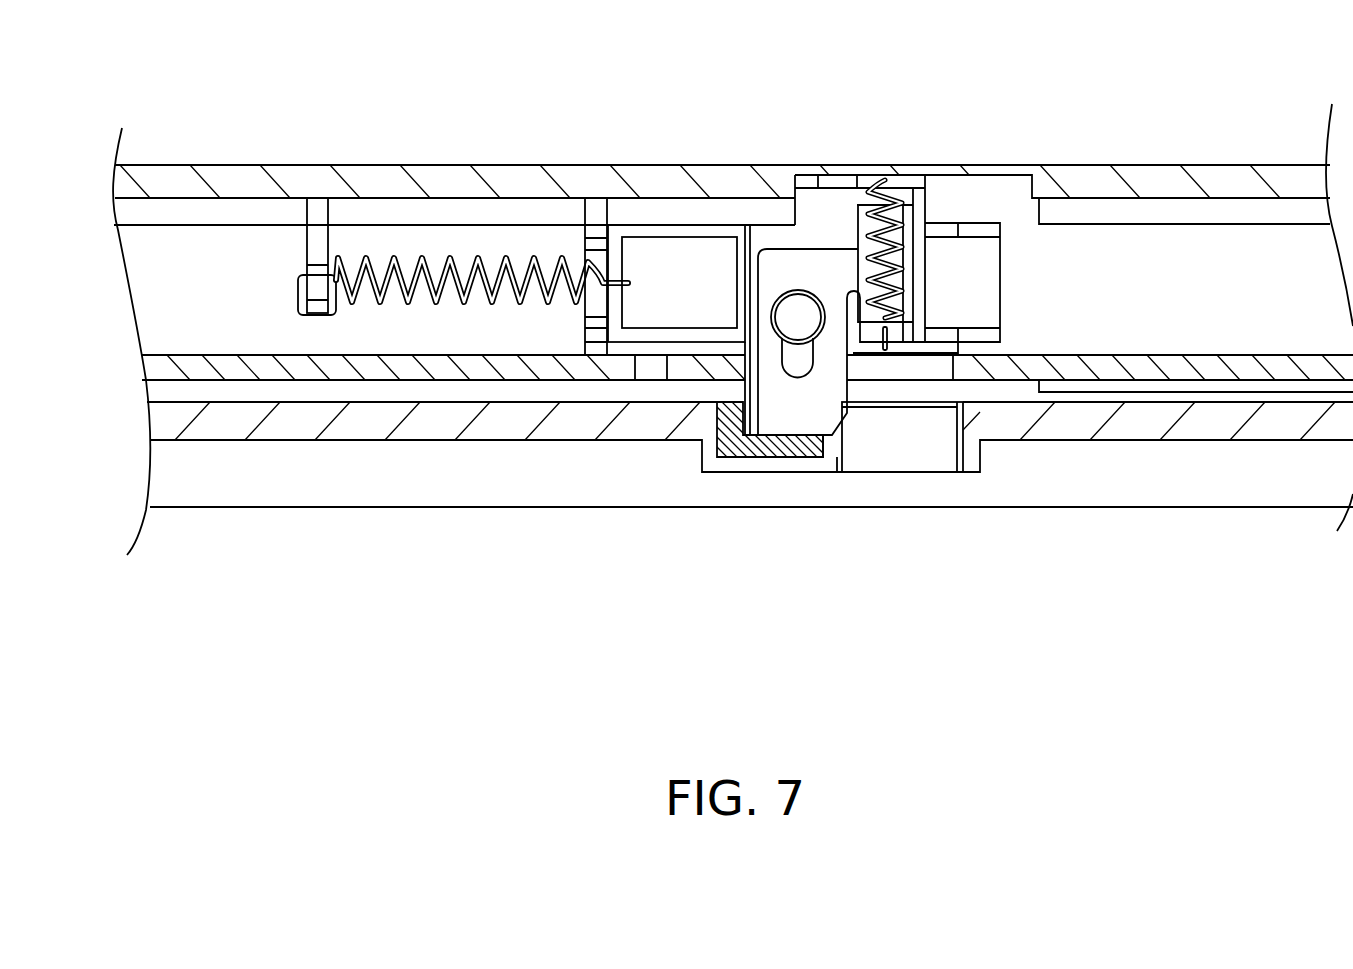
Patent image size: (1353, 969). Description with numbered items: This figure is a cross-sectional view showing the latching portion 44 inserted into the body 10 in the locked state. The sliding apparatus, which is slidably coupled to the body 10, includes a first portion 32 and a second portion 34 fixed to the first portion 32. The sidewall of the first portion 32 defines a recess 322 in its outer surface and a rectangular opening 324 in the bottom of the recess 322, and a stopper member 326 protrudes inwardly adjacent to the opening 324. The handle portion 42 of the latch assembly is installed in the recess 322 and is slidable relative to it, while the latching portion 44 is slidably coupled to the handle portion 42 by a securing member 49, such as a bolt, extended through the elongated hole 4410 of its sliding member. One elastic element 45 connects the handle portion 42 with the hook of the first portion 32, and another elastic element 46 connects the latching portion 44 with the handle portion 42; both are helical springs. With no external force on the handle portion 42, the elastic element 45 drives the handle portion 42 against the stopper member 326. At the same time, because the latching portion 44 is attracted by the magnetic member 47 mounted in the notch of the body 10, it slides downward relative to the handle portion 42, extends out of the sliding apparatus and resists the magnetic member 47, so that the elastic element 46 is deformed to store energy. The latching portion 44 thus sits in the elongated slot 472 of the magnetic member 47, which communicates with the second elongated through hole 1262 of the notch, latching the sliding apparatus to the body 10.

The body 10 is at (435, 430).
The first portion 32 is at (1084, 374).
The second portion 34 is at (1129, 172).
The handle portion 42 is at (687, 233).
The latching portion 44 is at (828, 417).
The elastic element 45 is at (443, 255).
The elastic element 46 is at (893, 215).
The magnetic member 47 is at (737, 448).
The securing member 49 is at (800, 305).
The recess 322 is at (972, 187).
The rectangular opening 324 is at (318, 200).
The stopper member 326 is at (597, 197).
The elongated slot 472 is at (763, 458).
The second elongated through hole 1262 is at (907, 462).
The elongated hole 4410 is at (797, 372).